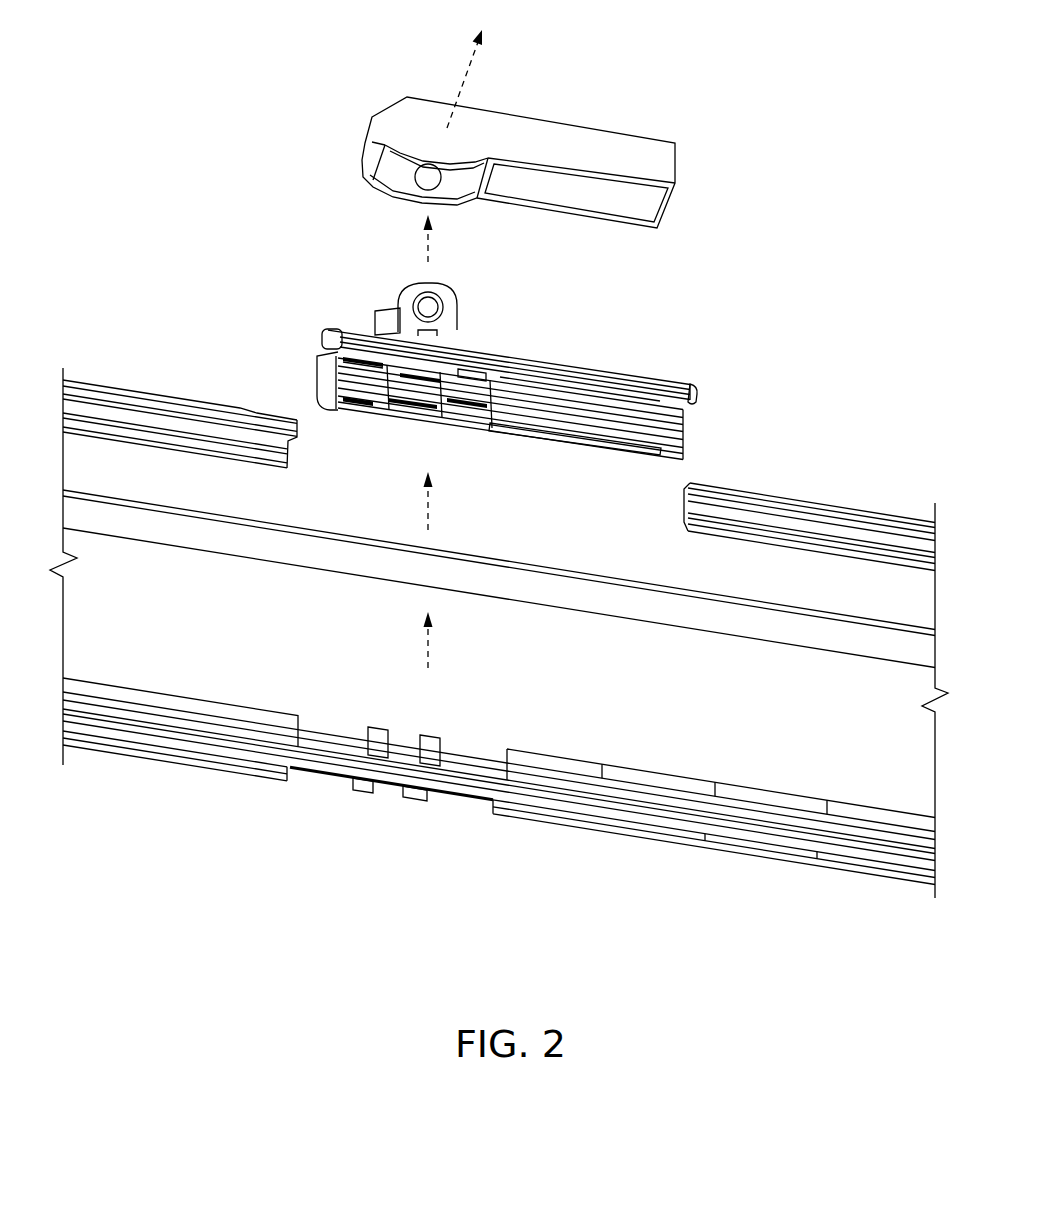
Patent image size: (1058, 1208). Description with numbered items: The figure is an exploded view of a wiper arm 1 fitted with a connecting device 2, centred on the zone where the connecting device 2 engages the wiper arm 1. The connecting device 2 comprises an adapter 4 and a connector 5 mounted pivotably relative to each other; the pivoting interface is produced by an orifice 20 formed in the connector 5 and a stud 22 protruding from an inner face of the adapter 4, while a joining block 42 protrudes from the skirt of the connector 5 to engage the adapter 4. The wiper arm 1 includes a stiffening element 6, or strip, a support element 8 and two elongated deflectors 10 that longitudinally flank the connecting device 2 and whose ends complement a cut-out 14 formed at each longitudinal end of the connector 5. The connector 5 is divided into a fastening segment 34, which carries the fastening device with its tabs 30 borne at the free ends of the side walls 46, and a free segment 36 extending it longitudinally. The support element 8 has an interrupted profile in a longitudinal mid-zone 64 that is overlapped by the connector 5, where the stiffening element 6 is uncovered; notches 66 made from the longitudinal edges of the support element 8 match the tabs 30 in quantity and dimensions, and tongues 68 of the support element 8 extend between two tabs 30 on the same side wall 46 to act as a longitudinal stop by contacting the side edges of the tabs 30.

The wiper arm 1 is at (210, 148).
The connecting device 2 is at (707, 152).
The adapter 4 is at (525, 130).
The connector 5 is at (530, 342).
The stiffening element 6 is at (592, 608).
The support element 8 is at (543, 813).
The deflectors 10 is at (130, 398).
The cut-out 14 is at (320, 346).
The orifice 20 is at (430, 300).
The stud 22 is at (427, 178).
The tabs 30 is at (478, 377).
The fastening segment 34 is at (481, 438).
The free segment 36 is at (664, 460).
The joining block 42 is at (458, 323).
The side walls 46 is at (557, 370).
The longitudinal mid-zone 64 is at (372, 848).
The notches 66 is at (320, 780).
The tongues 68 is at (378, 728).